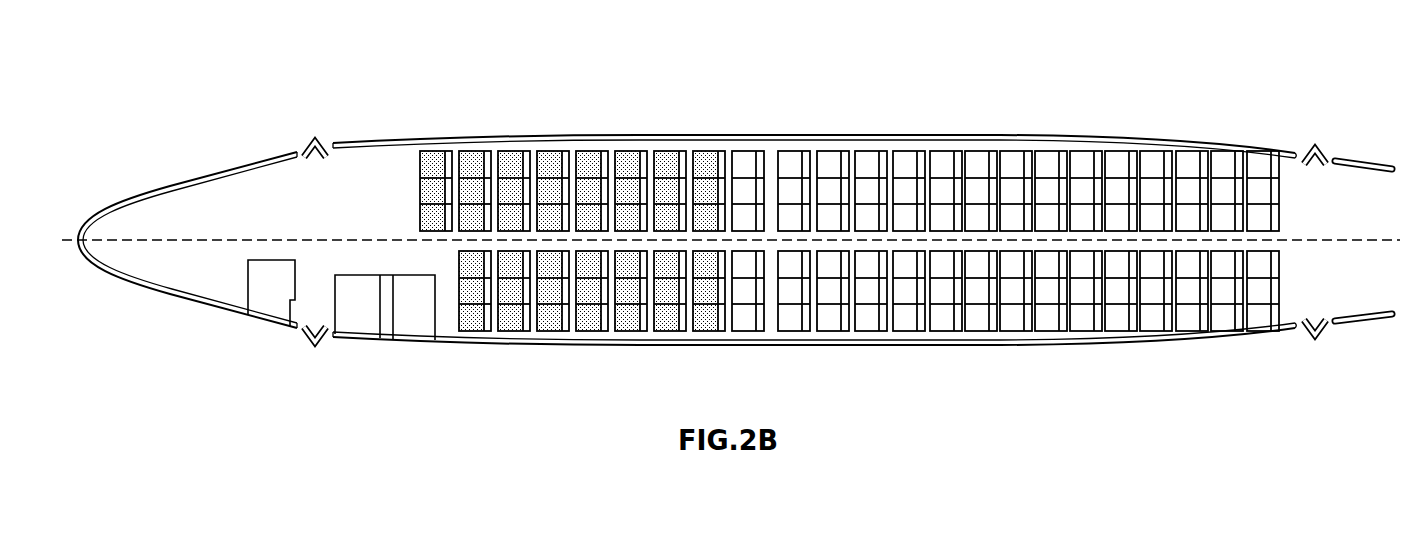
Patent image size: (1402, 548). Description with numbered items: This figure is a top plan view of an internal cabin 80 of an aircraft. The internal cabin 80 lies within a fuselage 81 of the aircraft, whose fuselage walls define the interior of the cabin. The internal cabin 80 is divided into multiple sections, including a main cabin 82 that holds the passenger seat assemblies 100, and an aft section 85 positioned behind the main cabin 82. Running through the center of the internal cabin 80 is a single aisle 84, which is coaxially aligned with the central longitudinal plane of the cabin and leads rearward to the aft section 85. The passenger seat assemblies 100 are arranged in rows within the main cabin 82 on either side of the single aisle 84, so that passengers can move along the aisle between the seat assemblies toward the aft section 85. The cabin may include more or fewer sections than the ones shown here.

The internal cabin 80 is at (330, 78).
The fuselage 81 is at (538, 140).
The main cabin 82 is at (473, 167).
The single aisle 84 is at (868, 237).
The aft section 85 is at (1299, 175).
The passenger seat assemblies 100 is at (746, 172).